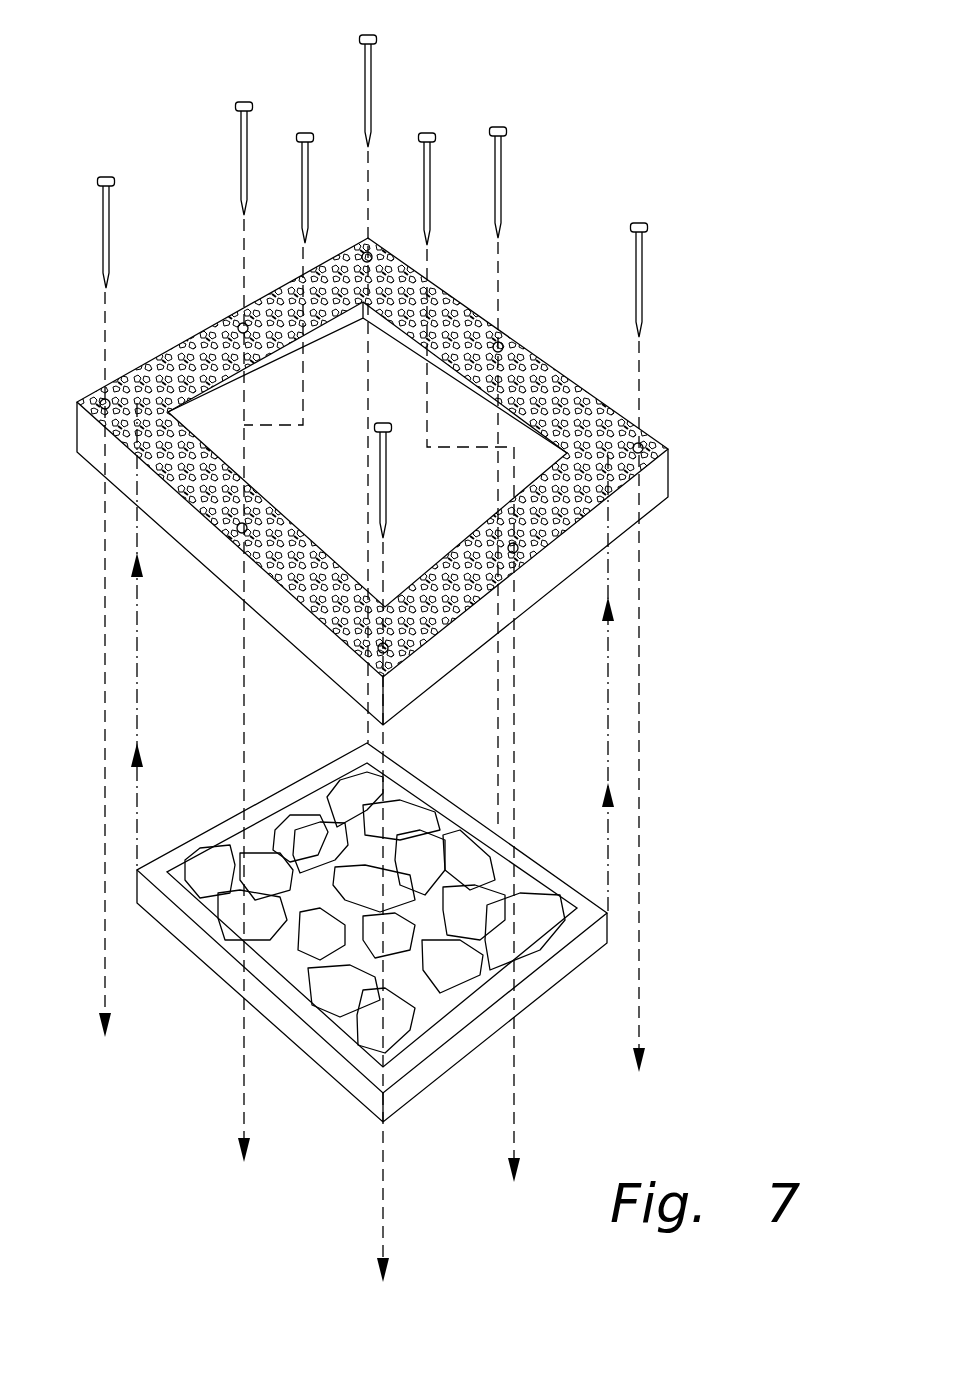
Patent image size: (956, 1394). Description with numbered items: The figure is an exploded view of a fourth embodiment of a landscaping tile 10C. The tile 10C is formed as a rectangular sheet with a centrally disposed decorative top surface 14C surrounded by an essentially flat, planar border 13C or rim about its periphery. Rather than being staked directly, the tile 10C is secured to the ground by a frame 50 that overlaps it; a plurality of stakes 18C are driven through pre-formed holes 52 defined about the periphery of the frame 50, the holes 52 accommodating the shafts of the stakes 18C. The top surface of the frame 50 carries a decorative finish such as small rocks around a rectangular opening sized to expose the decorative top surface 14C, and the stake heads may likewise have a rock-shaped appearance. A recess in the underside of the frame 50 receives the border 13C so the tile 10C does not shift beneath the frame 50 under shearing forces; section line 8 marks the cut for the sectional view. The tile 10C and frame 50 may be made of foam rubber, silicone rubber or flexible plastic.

The frame 50 is at (92, 440).
The pre-formed holes 52 is at (641, 446).
The stakes 18C is at (642, 283).
The border 13C is at (395, 770).
The decorative top surface 14C is at (430, 993).
The landscaping tile 10C is at (182, 1022).
The section line 8- 8 is at (547, 285).